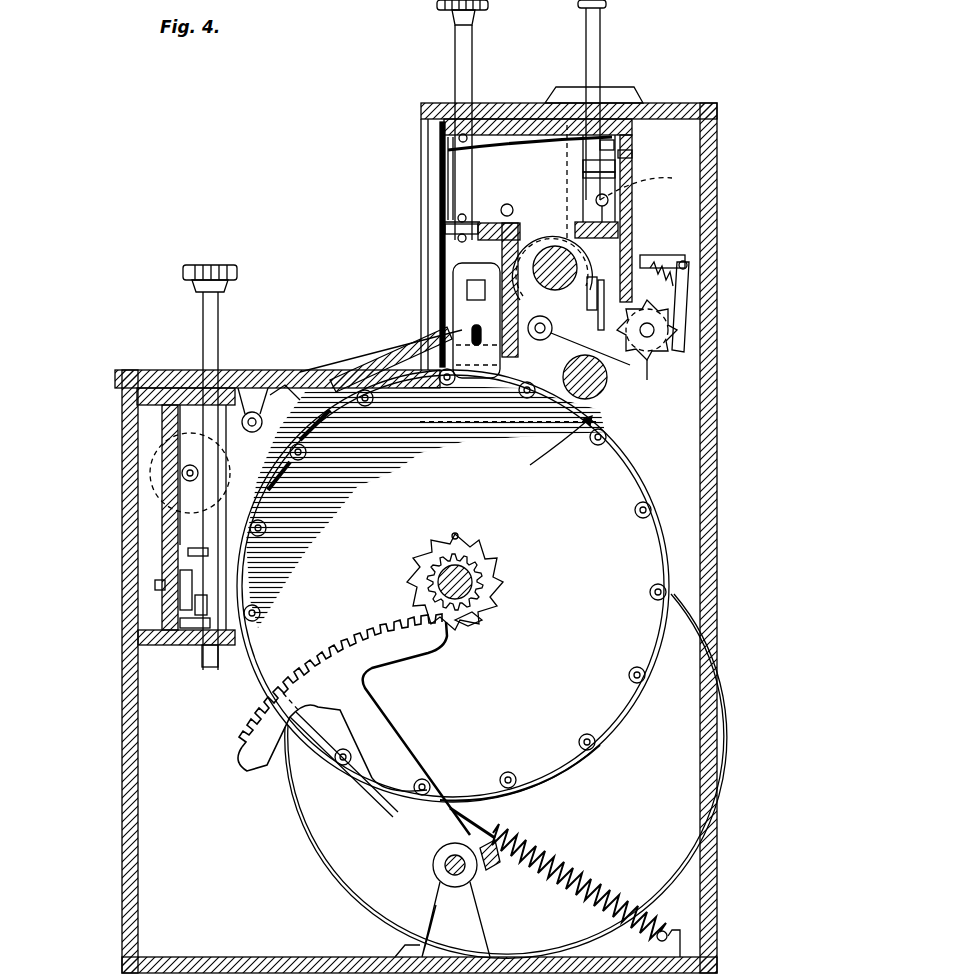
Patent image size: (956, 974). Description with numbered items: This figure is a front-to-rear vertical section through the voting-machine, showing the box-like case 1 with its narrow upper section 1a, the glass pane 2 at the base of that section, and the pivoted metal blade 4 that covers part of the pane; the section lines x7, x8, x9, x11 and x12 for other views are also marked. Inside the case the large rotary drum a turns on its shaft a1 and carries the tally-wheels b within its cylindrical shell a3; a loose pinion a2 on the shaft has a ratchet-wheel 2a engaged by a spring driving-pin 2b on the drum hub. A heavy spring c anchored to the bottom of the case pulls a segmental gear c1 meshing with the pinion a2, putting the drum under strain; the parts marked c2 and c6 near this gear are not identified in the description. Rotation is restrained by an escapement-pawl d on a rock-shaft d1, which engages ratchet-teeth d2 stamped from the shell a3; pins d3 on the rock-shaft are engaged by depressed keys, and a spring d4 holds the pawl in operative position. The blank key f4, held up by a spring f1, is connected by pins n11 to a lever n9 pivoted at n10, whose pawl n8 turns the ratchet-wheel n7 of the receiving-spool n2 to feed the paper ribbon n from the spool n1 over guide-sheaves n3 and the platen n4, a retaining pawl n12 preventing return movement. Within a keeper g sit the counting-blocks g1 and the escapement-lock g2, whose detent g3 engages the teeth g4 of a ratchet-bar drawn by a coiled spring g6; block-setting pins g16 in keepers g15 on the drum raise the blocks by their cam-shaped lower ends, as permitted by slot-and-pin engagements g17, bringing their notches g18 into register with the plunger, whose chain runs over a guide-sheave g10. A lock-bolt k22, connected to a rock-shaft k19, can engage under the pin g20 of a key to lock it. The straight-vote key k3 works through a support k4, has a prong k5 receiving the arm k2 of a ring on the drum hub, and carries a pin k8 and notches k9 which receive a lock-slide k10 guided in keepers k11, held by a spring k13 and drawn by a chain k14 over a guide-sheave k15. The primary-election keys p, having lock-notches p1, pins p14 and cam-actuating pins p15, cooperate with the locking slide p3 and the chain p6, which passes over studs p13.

The case 1 is at (718, 730).
The case-section 1a is at (672, 110).
The glass pane 2 is at (420, 372).
The metal blade 4 is at (440, 350).
The ratchet-wheel 2a is at (480, 612).
The spring driving-pin 2b is at (453, 532).
The rotary drum a is at (628, 698).
The drum-shaft a1 is at (428, 578).
The loose pinion a2 is at (494, 570).
The peripheral shell a3 is at (572, 768).
The tally-wheel b is at (570, 225).
The spring c is at (640, 190).
The segmental gear c1 is at (392, 736).
The pivot c2 is at (433, 866).
The block c6 is at (494, 868).
The escapement-pawl d is at (640, 470).
The rock-shaft d1 is at (561, 445).
The ratchet-teeth d2 is at (310, 740).
The pins d3 is at (425, 507).
The spring d4 is at (607, 377).
The spring f1 is at (478, 145).
The blank key f4 is at (460, 62).
The keeper g is at (468, 330).
The counting-blocks g1 is at (482, 385).
The escapement-lock g2 is at (492, 312).
The detent g3 is at (490, 225).
The teeth g4 is at (473, 201).
The coiled spring g6 is at (512, 208).
The guide-sheave g10 is at (466, 222).
The keepers g15 is at (266, 535).
The block-setting pins g16 is at (650, 592).
The slot-and-pin engagements g17 is at (445, 345).
The notches g18 is at (448, 312).
The pin g20 is at (461, 178).
The projecting arm k2 is at (162, 553).
The straight-vote key k3 is at (204, 348).
The support k4 is at (172, 645).
The prong k5 is at (315, 412).
The pin k8 is at (155, 525).
The notches k9 is at (230, 585).
The lock-slide k10 is at (200, 660).
The keepers k11 is at (258, 620).
The spring k13 is at (195, 610).
The chain k14 is at (178, 600).
The guide-sheave k15 is at (155, 585).
The rock-shaft k19 is at (552, 290).
The lock-bolts k22 is at (597, 200).
The paper ribbon n is at (278, 390).
The spool n1 is at (160, 468).
The receiving-spool n2 is at (645, 382).
The guide-sheaves n3 is at (552, 336).
The platen n4 is at (350, 392).
The ratchet-wheel n7 is at (680, 330).
The spring-pressed pawl n8 is at (688, 282).
The lever n9 is at (648, 262).
The pivot n10 is at (620, 250).
The pins n11 is at (446, 232).
The retaining pawl n12 is at (596, 305).
The primary-election keys p is at (596, 20).
The lock-notches p1 is at (580, 165).
The locking slide p3 is at (649, 184).
The chain p6 is at (633, 152).
The studs p13 is at (624, 175).
The pins p14 is at (606, 140).
The cam-actuating pins p15 is at (582, 125).
The section line x7 is at (650, 135).
The section line x8 is at (553, 0).
The section line x9 is at (363, 198).
The section line x11 is at (501, 480).
The section line x12 is at (238, 720).